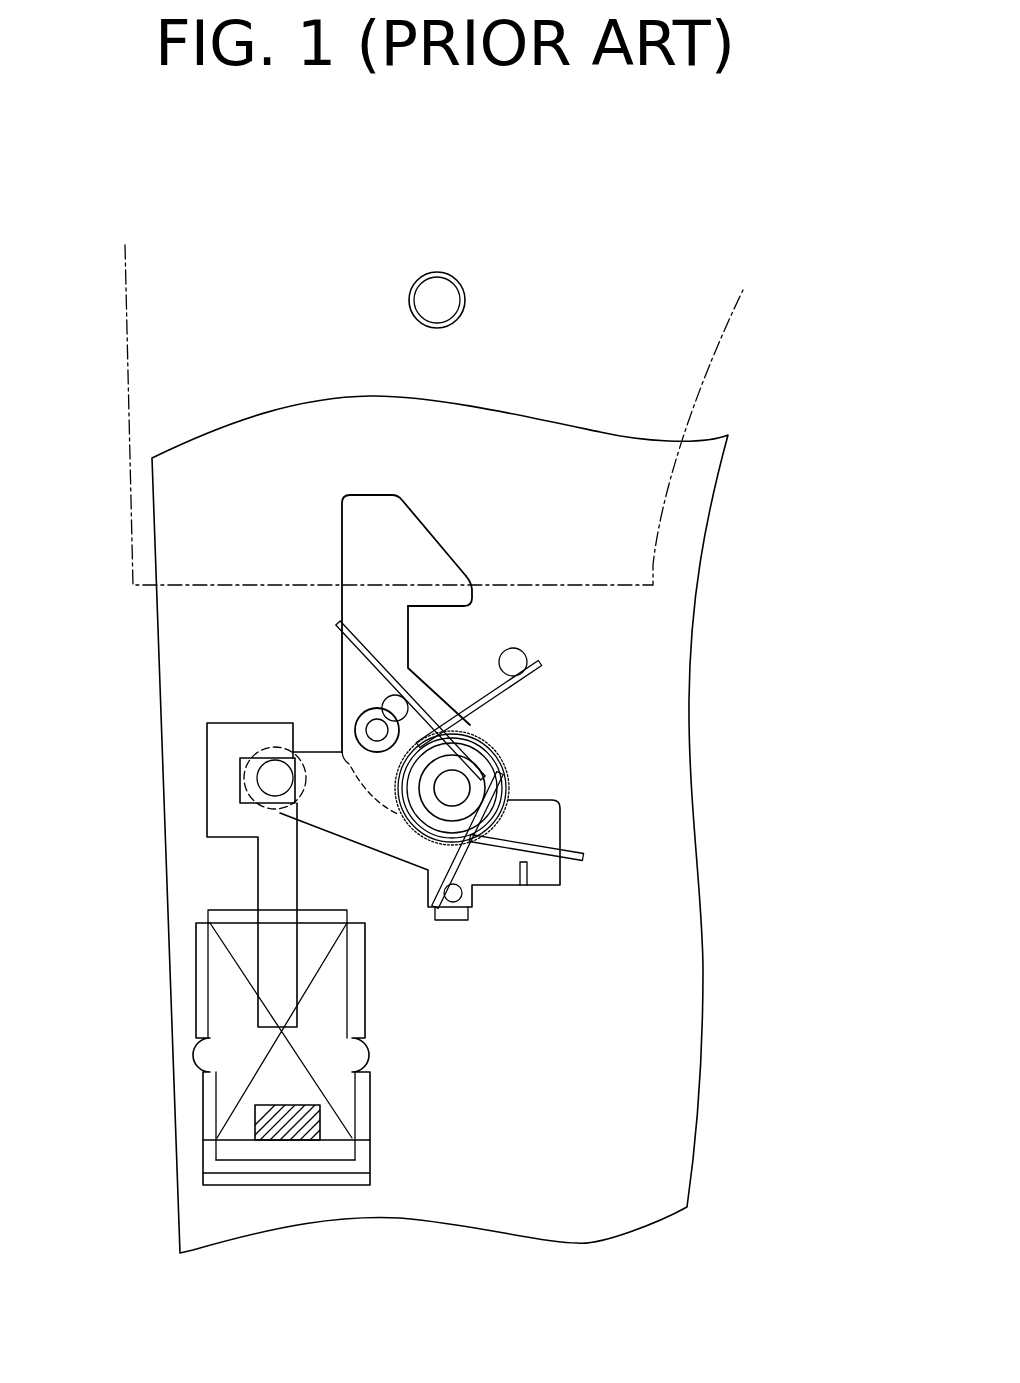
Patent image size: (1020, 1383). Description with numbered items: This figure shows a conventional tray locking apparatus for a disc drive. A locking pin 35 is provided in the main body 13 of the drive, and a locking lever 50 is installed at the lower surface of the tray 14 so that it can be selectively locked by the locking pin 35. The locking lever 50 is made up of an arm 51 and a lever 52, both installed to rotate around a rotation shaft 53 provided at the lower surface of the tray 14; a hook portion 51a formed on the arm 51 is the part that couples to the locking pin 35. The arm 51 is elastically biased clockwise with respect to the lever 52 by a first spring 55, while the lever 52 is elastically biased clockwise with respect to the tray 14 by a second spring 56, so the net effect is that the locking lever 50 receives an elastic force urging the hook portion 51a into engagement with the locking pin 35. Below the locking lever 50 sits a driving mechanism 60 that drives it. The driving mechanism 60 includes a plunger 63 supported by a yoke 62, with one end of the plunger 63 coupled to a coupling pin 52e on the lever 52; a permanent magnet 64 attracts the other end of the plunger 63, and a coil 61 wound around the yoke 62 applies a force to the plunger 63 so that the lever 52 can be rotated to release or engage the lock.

The main body 13 is at (138, 340).
The tray 14 is at (675, 932).
The locking pin 35 is at (447, 278).
The locking lever 50 is at (320, 496).
The arm 51 is at (399, 506).
The hook portion 51a is at (458, 590).
The lever 52 is at (346, 820).
The coupling pin 52e is at (270, 779).
The rotation shaft 53 is at (455, 787).
The first spring 55 is at (355, 653).
The second spring 56 is at (575, 852).
The driving mechanism 60 is at (390, 1034).
The coil 61 is at (225, 978).
The yoke 62 is at (368, 1108).
The plunger 63 is at (220, 735).
The permanent magnet 64 is at (290, 1140).